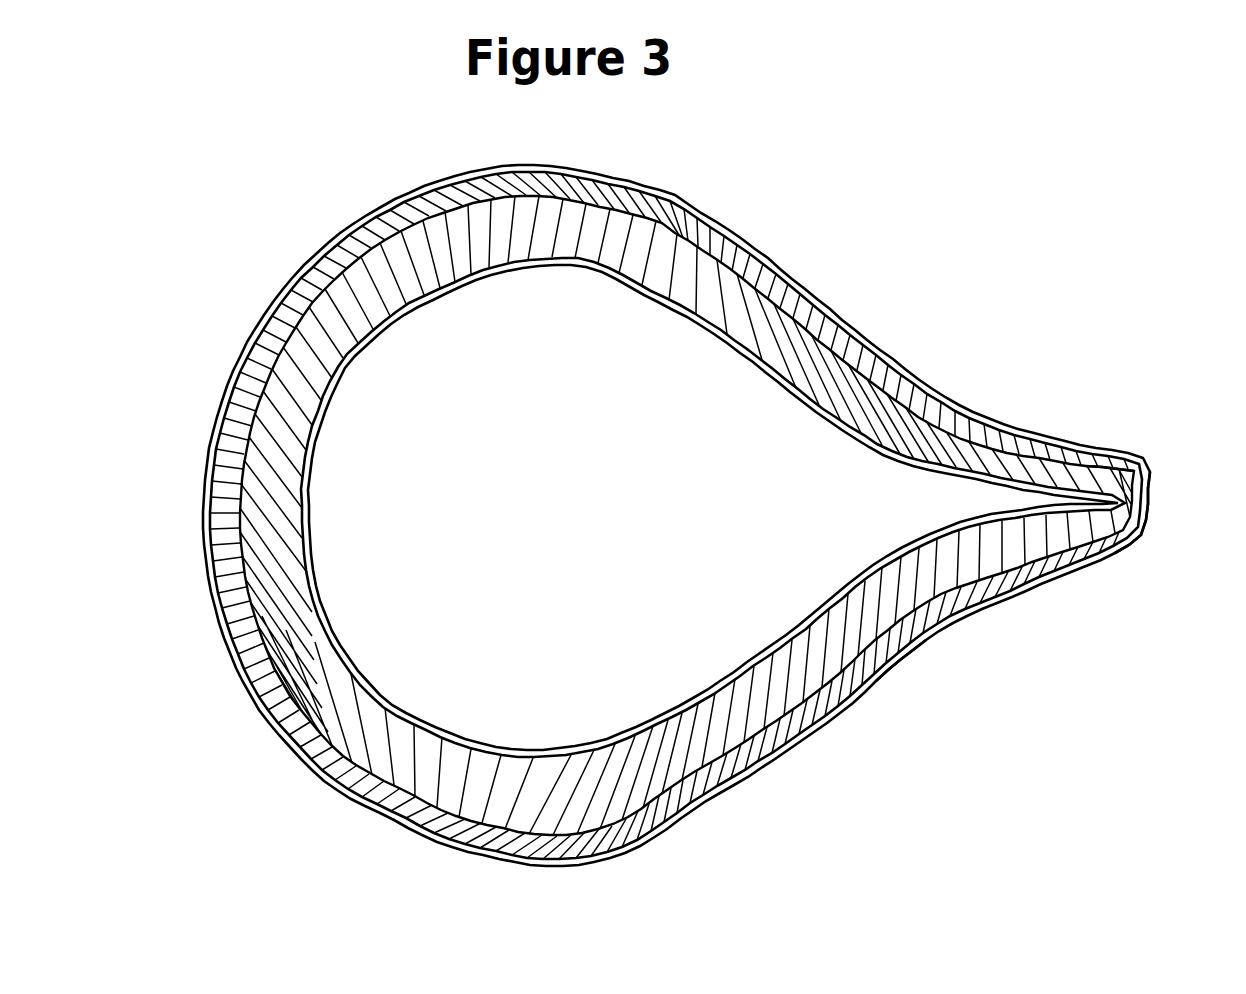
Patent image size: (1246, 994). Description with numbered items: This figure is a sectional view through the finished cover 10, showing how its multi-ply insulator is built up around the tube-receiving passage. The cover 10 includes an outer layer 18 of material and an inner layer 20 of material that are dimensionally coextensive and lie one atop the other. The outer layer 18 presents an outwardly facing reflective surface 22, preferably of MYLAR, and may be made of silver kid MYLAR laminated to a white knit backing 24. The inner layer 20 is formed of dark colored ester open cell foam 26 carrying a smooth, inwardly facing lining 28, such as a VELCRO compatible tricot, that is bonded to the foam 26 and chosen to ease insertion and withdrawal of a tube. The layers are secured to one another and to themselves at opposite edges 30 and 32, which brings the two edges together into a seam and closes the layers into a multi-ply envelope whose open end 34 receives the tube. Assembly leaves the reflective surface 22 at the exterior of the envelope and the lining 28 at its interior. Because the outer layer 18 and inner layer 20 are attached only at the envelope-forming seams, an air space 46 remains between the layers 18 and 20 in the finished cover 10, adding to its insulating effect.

The cover 10 is at (853, 298).
The outer layer 18 is at (700, 822).
The inner layer 20 is at (515, 752).
The reflective surface 22 is at (766, 779).
The white knit backing 24 is at (831, 708).
The open cell foam 26 is at (623, 778).
The lining 28 is at (440, 728).
The edge 30 is at (1113, 520).
The edge 32 is at (1092, 486).
The open end 34 is at (562, 491).
The air space 46 is at (905, 657).